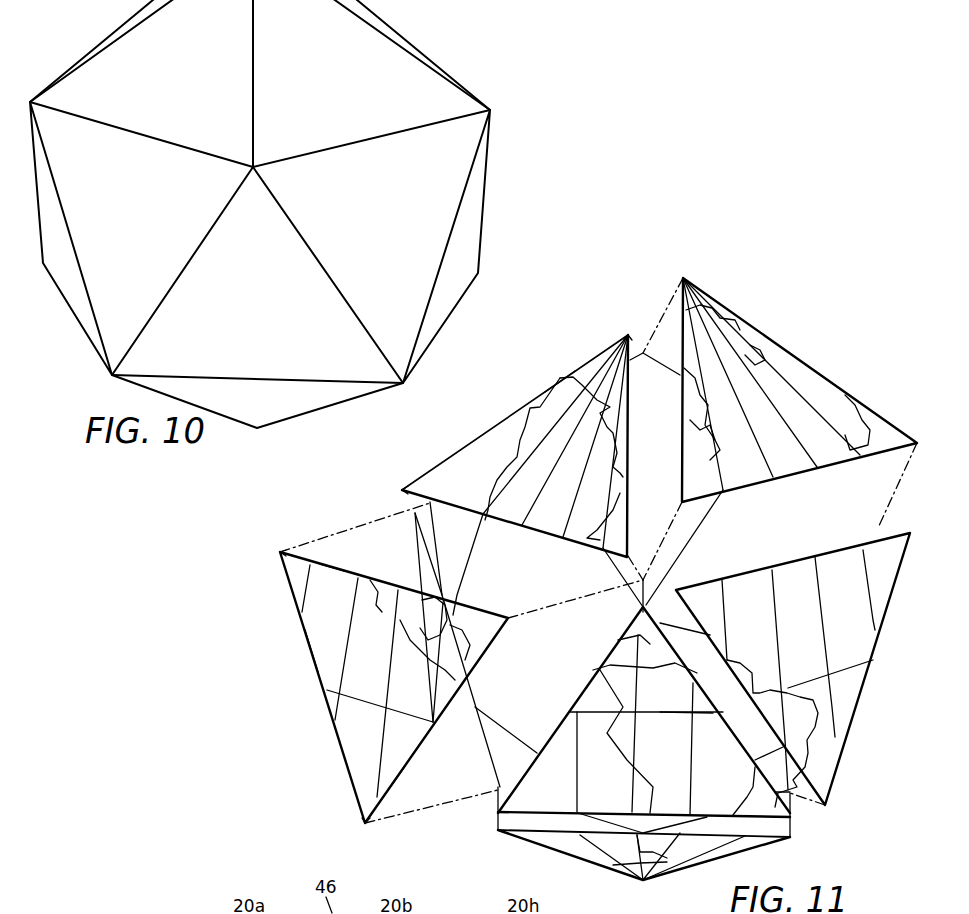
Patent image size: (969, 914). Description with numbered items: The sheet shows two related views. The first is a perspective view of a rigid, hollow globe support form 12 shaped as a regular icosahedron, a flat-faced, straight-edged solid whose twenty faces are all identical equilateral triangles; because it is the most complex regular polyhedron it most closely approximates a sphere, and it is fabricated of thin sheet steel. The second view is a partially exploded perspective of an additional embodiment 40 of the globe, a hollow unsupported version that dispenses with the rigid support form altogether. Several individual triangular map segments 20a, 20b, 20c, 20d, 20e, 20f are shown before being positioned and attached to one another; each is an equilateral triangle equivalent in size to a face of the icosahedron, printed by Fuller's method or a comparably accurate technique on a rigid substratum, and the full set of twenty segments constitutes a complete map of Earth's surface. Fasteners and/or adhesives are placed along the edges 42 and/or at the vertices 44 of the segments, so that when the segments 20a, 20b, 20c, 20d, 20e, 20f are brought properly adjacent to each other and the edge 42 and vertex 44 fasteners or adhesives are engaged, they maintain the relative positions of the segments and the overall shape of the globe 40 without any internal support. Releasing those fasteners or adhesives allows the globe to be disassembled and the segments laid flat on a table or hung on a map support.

In FIG. 10, the globe support form 12 is at (462, 61).
In FIG. 11, the hollow unsupported globe embodiment 40 is at (200, 600).
In FIG. 11, the map segment 20a is at (498, 427).
In FIG. 11, the map segment 20b is at (768, 339).
In FIG. 11, the map segment 20c is at (355, 762).
In FIG. 11, the map segment 20d is at (843, 719).
In FIG. 11, the map segment 20e is at (773, 813).
In FIG. 11, the map segment 20f is at (735, 849).
In FIG. 11, the edges 42 is at (558, 380).
In FIG. 11, the vertices 44 is at (626, 334).